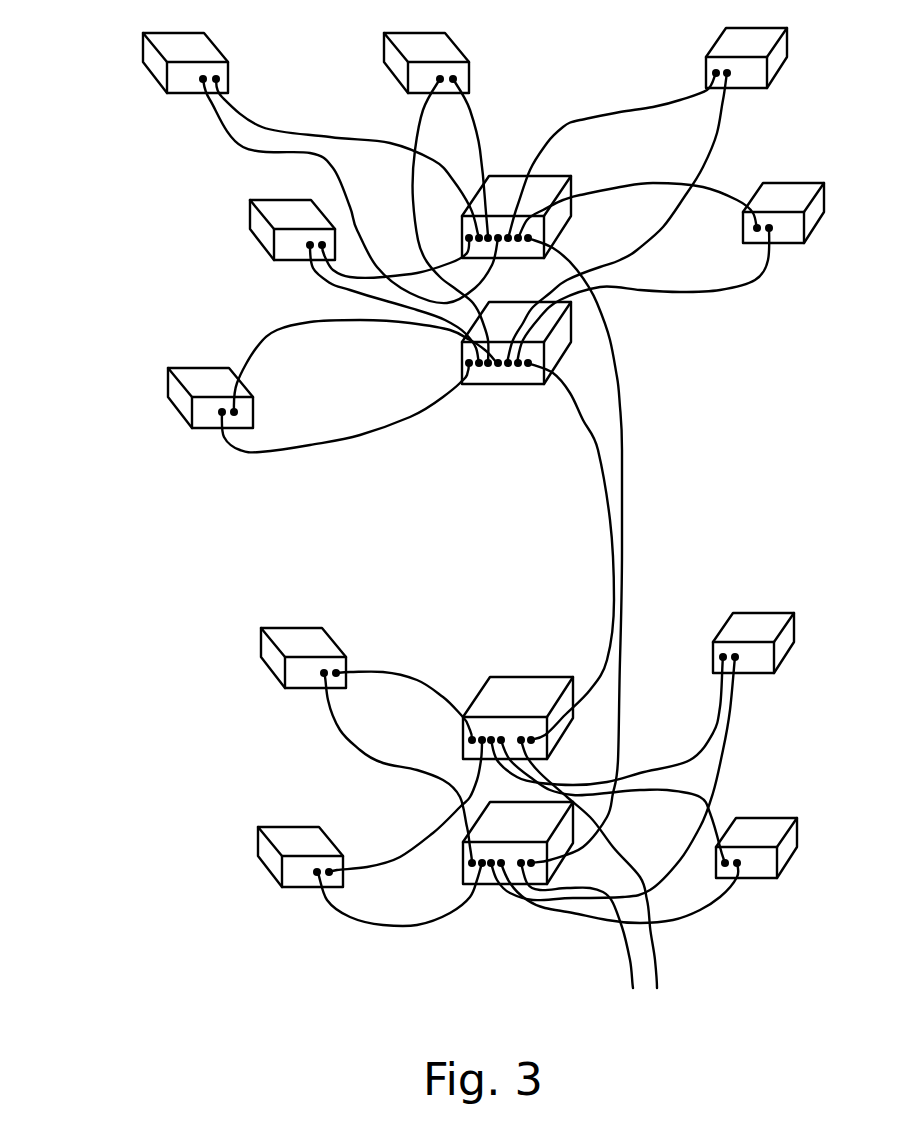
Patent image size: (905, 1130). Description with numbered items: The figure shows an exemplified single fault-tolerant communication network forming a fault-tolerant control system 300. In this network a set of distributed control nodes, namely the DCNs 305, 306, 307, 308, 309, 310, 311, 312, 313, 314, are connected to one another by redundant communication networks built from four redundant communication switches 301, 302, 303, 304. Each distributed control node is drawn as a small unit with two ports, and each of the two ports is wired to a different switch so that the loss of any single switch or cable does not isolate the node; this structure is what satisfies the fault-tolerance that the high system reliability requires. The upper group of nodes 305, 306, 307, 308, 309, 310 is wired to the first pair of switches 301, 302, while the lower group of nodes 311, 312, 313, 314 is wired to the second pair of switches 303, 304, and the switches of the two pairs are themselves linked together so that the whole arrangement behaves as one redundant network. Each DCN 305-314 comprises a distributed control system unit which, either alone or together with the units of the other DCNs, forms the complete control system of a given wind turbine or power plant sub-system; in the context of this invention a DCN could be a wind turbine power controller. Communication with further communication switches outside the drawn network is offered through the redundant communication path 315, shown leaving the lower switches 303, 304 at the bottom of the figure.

The fault-tolerant control system 300 is at (160, 494).
The communication switch 301 is at (538, 521).
The communication switch 302 is at (542, 502).
The communication switch 303 is at (518, 701).
The communication switch 304 is at (518, 869).
The distributed control node 305 is at (332, 386).
The distributed control node 306 is at (364, 266).
The distributed control node 307 is at (320, 152).
The distributed control node 308 is at (436, 182).
The distributed control node 309 is at (647, 181).
The distributed control node 310 is at (670, 257).
The distributed control node 311 is at (366, 729).
The distributed control node 312 is at (370, 833).
The distributed control node 313 is at (649, 831).
The distributed control node 314 is at (642, 739).
The redundant communication path 315 is at (596, 881).